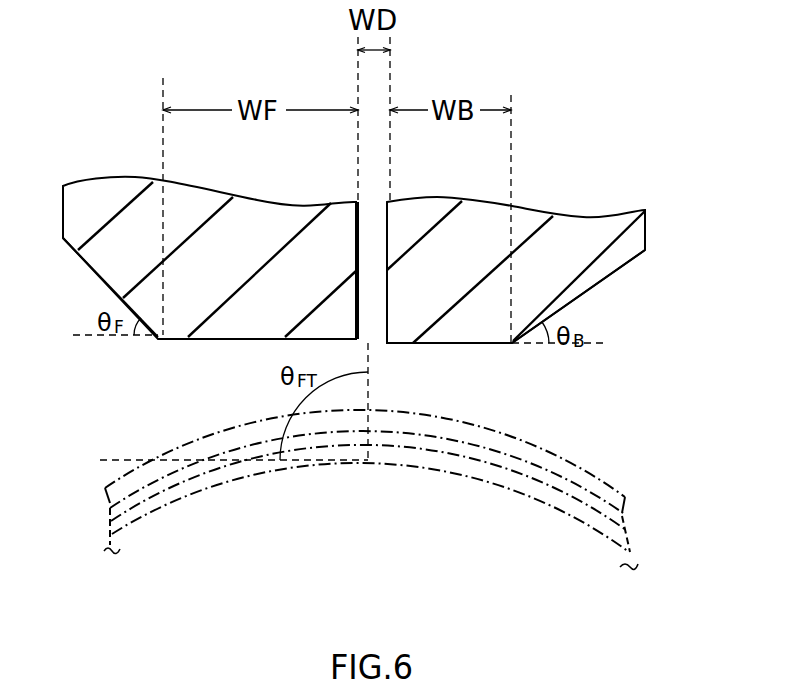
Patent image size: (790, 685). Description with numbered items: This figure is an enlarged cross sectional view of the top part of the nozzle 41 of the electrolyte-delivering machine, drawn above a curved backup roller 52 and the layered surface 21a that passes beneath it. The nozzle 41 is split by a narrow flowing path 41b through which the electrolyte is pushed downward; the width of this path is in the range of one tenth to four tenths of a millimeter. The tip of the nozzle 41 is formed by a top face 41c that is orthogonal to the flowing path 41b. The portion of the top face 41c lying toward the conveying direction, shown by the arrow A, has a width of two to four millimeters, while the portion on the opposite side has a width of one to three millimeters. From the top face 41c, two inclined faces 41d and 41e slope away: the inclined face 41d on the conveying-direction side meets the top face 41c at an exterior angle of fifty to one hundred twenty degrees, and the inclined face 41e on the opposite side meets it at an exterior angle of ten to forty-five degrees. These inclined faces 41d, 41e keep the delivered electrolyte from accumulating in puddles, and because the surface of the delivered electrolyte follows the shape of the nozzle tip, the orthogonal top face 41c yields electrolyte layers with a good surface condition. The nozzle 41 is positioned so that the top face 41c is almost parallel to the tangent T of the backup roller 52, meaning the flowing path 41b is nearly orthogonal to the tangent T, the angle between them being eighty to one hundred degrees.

The nozzle 41 is at (572, 228).
The flowing path 41b is at (368, 225).
The top face 41c is at (472, 345).
The inclined face 41d is at (85, 263).
The inclined face 41e is at (610, 280).
The backup roller 52 is at (530, 520).
The outer surface of tape roll 21a is at (600, 478).
The tangent T is at (117, 457).
The conveying direction A is at (233, 397).